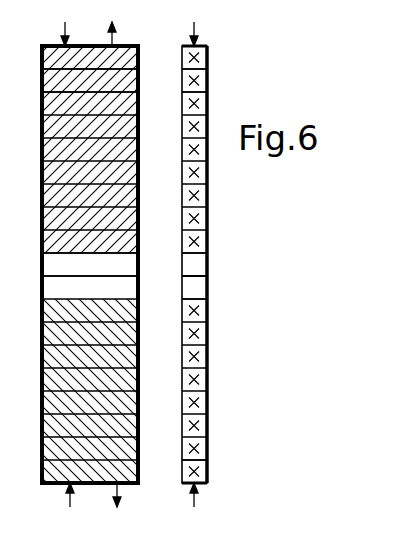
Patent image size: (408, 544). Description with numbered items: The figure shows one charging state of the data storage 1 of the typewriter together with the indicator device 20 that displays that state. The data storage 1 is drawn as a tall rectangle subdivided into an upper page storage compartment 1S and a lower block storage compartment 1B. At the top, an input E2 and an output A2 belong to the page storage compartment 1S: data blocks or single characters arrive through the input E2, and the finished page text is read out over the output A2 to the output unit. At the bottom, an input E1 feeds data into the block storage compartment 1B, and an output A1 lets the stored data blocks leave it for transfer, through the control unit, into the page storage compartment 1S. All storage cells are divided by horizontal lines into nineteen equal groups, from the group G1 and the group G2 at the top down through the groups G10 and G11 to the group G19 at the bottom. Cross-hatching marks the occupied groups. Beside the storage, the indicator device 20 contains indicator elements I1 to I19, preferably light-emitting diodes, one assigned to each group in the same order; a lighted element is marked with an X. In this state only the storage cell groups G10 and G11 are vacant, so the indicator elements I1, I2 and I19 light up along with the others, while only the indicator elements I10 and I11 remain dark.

The data storage 1 is at (140, 243).
The page storage compartment 1S is at (132, 172).
The block storage compartment 1B is at (134, 427).
The storage cell group G1 is at (127, 59).
The storage cell group G2 is at (125, 88).
The storage cell group G10 is at (125, 264).
The storage cell group G11 is at (125, 290).
The storage cell group G19 is at (128, 470).
The input of data storage E2 is at (65, 30).
The output of data storage A2 is at (112, 31).
The input of data storage E1 is at (70, 497).
The output of data storage A1 is at (117, 496).
The indicator device 20 is at (209, 266).
The indicator element I1 is at (208, 57).
The indicator element I2 is at (196, 81).
The indicator element I10 is at (198, 260).
The indicator element I11 is at (198, 285).
The indicator element I19 is at (200, 472).